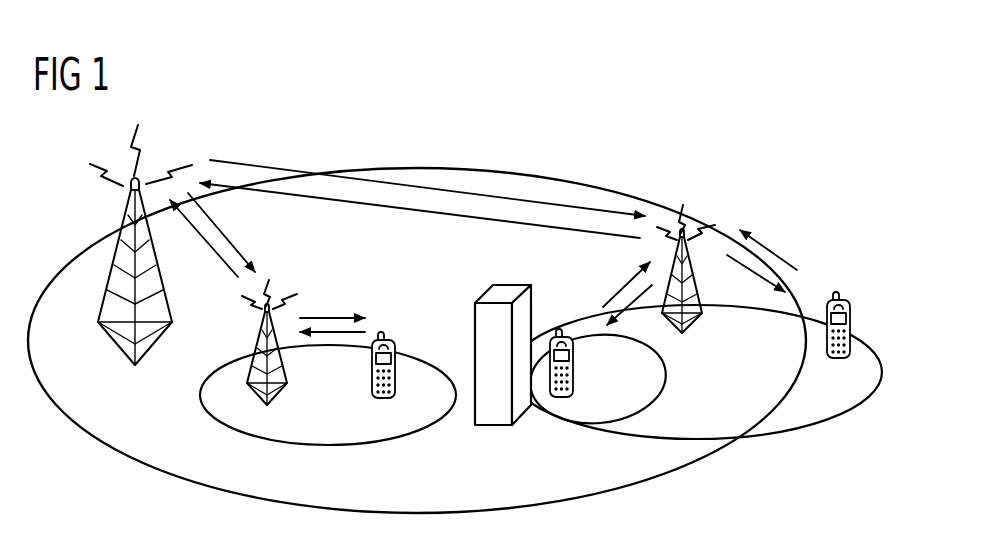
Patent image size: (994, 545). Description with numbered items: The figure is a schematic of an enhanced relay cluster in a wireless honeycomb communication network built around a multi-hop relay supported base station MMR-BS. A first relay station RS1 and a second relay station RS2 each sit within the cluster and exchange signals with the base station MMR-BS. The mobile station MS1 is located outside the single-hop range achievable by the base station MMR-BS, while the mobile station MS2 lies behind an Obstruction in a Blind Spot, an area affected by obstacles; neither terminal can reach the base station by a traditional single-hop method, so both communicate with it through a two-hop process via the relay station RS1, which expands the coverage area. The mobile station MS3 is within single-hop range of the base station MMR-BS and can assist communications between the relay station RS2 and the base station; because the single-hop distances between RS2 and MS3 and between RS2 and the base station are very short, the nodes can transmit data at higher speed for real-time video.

The multi-hop relay supported base station MMR-BS is at (135, 365).
The relay station RS1 is at (683, 333).
The relay station RS2 is at (268, 405).
The mobile station MS1 is at (835, 294).
The mobile station MS2 is at (559, 328).
The mobile station MS3 is at (386, 337).
The obstruction Obstruction is at (495, 426).
The blind spot Blind Spot is at (622, 390).